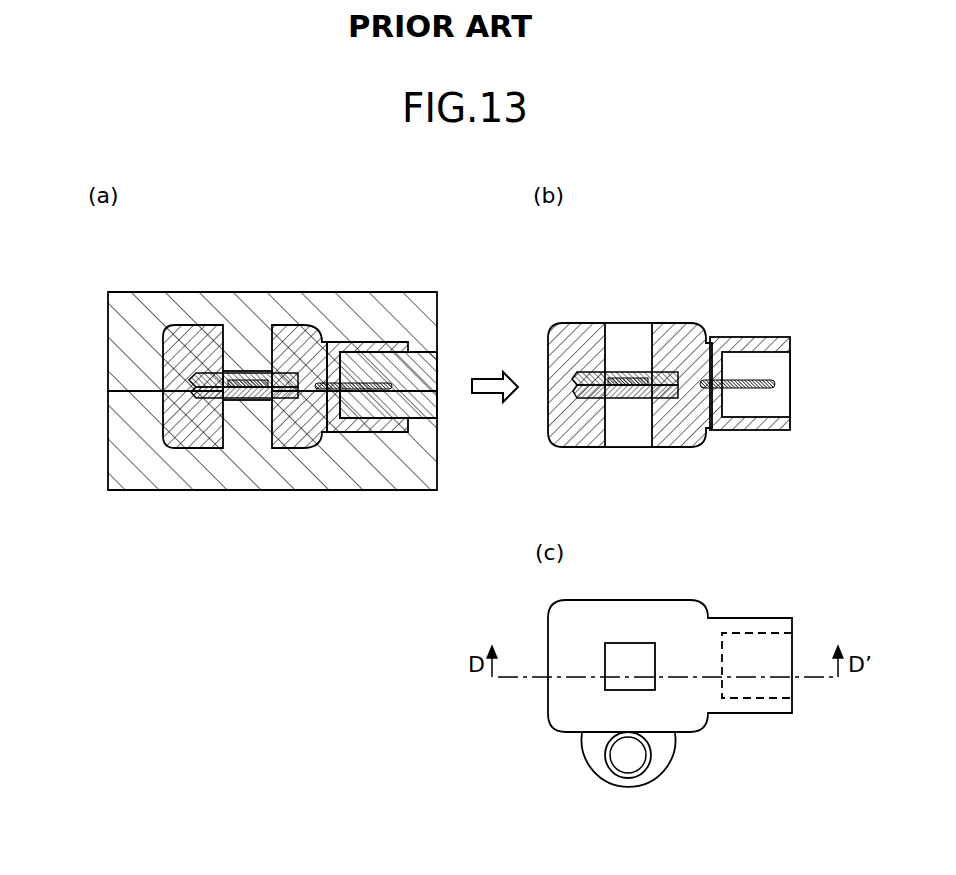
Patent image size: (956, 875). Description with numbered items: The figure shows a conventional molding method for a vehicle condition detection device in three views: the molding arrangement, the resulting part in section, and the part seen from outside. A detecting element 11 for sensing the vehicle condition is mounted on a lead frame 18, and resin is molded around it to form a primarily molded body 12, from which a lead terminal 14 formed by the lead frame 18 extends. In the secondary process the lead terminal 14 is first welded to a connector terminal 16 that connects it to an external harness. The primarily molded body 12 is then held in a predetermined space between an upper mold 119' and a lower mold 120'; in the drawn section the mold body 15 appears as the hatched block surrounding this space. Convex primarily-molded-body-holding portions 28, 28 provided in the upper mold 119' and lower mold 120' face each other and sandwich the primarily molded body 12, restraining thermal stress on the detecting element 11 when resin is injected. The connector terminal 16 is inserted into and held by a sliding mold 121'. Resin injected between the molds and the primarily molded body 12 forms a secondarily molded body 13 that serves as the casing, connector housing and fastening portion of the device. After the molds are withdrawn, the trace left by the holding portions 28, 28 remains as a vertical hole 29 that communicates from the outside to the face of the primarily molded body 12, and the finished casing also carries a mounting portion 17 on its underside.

The upper mold 119' is at (272, 309).
The lower mold 120' is at (272, 478).
The sliding mold 121' is at (420, 357).
The primarily-molded-body-holding portion 28 is at (243, 348).
The secondarily molded body 13 is at (170, 430).
The mold body 15 is at (389, 346).
The primarily molded body 12 is at (198, 373).
The lead frame 18 is at (205, 390).
The detecting element 11 is at (257, 403).
The lead terminal 14 is at (312, 412).
The connector terminal 16 is at (376, 390).
The vertical hole 29 is at (628, 350).
The mounting hole 17 is at (647, 770).